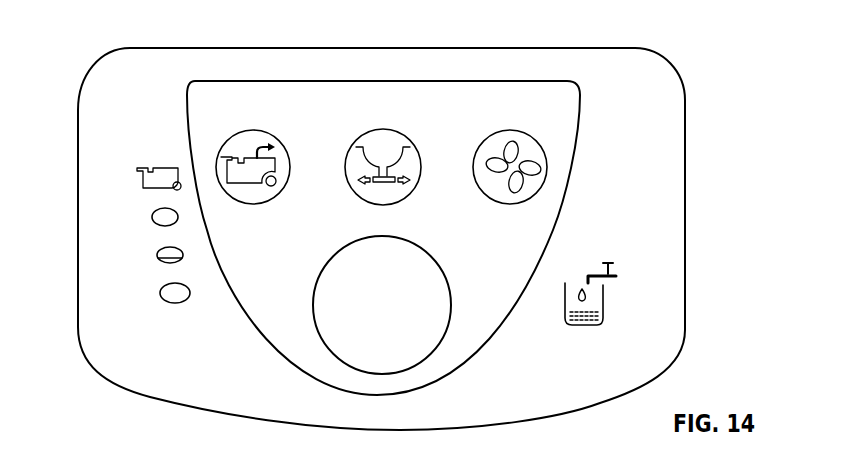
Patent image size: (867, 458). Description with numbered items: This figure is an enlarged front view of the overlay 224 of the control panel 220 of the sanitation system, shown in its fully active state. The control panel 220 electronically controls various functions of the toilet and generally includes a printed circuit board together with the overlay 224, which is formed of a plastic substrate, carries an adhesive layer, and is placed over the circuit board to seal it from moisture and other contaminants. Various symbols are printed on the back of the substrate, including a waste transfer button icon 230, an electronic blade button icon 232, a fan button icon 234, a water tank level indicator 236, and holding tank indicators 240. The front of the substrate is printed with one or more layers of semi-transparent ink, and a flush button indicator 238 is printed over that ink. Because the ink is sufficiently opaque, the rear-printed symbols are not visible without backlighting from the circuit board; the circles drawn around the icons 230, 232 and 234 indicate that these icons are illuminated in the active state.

The control panel 220 is at (106, 31).
The overlay 224 is at (110, 66).
The waste transfer button icon 230 is at (247, 183).
The electronic blade button icon 232 is at (405, 180).
The fan button icon 234 is at (503, 150).
The water tank level indicator 236 is at (603, 305).
The flush button indicator 238 is at (440, 290).
The holding tank indicators 240 is at (158, 252).